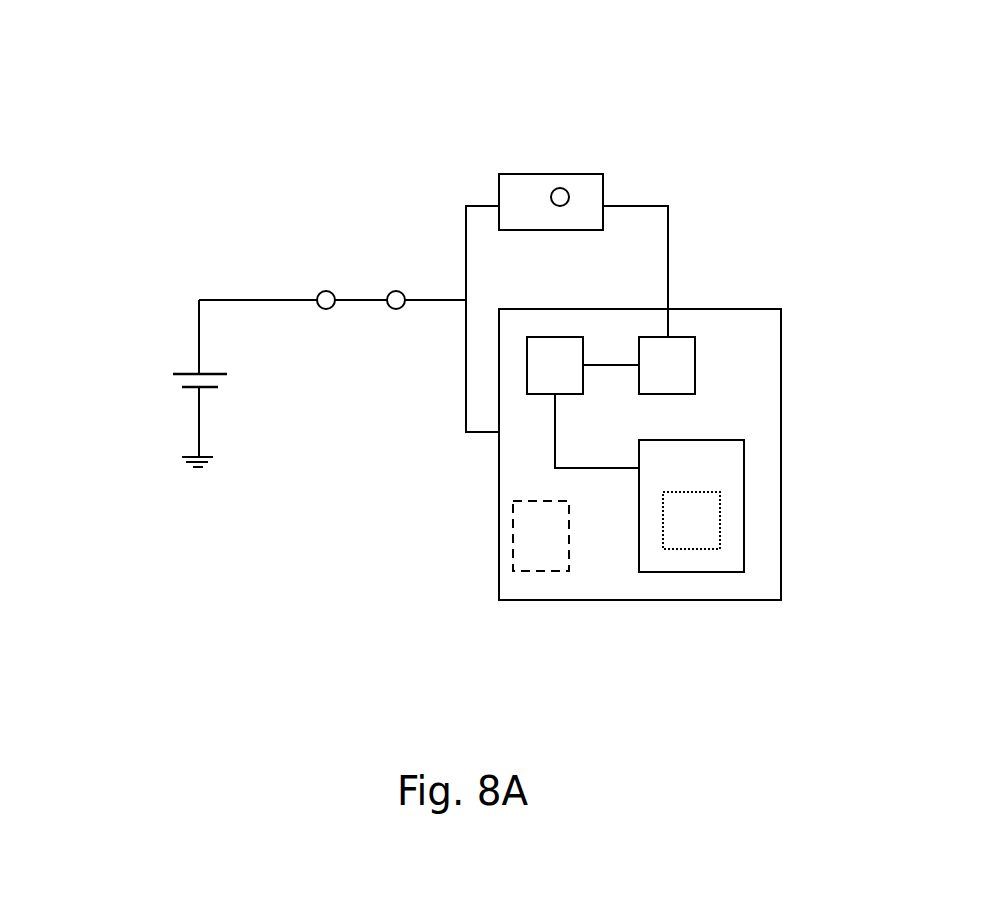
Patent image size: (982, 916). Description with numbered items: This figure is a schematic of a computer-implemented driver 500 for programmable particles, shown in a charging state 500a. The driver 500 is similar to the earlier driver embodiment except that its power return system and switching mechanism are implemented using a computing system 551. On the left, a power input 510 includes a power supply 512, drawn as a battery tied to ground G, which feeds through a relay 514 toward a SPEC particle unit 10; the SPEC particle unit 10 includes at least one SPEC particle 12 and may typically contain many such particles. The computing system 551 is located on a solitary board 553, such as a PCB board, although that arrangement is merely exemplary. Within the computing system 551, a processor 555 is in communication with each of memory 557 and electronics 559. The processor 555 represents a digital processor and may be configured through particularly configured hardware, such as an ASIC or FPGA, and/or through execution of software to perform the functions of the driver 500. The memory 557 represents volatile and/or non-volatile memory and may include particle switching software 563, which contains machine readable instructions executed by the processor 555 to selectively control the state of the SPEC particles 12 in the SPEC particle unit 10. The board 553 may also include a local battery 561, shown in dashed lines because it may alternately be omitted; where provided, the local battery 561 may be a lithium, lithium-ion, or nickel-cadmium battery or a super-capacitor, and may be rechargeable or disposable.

The computer-implemented driver 500 is at (470, 85).
The power input 510 is at (255, 168).
The power supply 512 is at (162, 360).
The ground G is at (200, 467).
The relay 514 is at (350, 300).
The charging state 500a is at (385, 263).
The SPEC particle unit 10 is at (540, 208).
The SPEC particle 12 is at (566, 190).
The board 553 is at (782, 417).
The computing system 551 is at (629, 640).
The processor 555 is at (536, 377).
The electronics 559 is at (649, 373).
The memory 557 is at (673, 476).
The particle switching software 563 is at (673, 530).
The local battery 561 is at (521, 536).